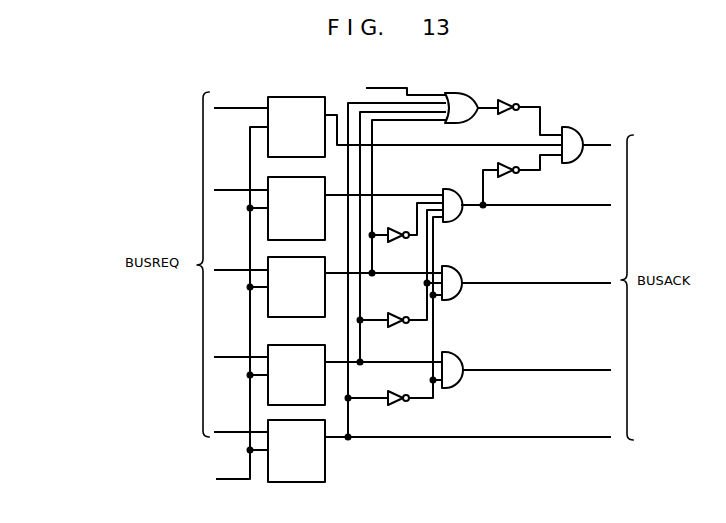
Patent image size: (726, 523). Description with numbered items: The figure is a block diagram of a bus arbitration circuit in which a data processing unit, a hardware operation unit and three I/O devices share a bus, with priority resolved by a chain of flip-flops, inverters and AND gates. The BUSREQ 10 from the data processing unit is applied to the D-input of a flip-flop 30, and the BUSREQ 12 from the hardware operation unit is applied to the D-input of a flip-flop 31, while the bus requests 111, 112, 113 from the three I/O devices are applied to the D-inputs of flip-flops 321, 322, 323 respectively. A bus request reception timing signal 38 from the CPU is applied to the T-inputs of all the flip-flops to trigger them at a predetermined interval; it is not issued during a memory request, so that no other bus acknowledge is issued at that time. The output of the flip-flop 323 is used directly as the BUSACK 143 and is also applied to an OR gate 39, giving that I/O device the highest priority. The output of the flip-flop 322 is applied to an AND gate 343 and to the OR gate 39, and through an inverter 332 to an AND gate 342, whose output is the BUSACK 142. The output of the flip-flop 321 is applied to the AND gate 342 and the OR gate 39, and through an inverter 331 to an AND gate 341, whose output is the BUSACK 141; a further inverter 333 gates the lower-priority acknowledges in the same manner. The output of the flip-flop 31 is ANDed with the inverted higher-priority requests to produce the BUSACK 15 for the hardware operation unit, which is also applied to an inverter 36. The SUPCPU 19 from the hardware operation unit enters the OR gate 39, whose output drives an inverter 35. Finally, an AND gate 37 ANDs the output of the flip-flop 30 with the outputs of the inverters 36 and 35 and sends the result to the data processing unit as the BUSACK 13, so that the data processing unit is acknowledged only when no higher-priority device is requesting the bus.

The BUSREQ 10 is at (234, 108).
The BUSREQ 12 is at (229, 190).
The bus request line 111 is at (230, 270).
The bus request line 112 is at (230, 357).
The bus request line 113 is at (230, 432).
The flip-flop 30 is at (291, 97).
The flip-flop 31 is at (312, 177).
The flip-flop 321 is at (298, 318).
The flip-flop 322 is at (298, 345).
The flip-flop 323 is at (326, 462).
The bus request reception timing signal 38 is at (230, 479).
The SUPCPU 19 is at (392, 88).
The OR gate 39 is at (470, 94).
The inverter 35 is at (510, 100).
The inverter 36 is at (509, 177).
The AND gate 37 is at (576, 127).
The BUSACK 13 is at (608, 145).
The AND gate 341 is at (459, 189).
The AND gate 342 is at (452, 266).
The AND gate 343 is at (452, 352).
The inverter 331 is at (396, 228).
The inverter 332 is at (398, 313).
The inverter 333 is at (398, 391).
The BUSACK 15 is at (600, 205).
The BUSACK 141 is at (596, 283).
The BUSACK 142 is at (596, 370).
The BUSACK 143 is at (594, 437).